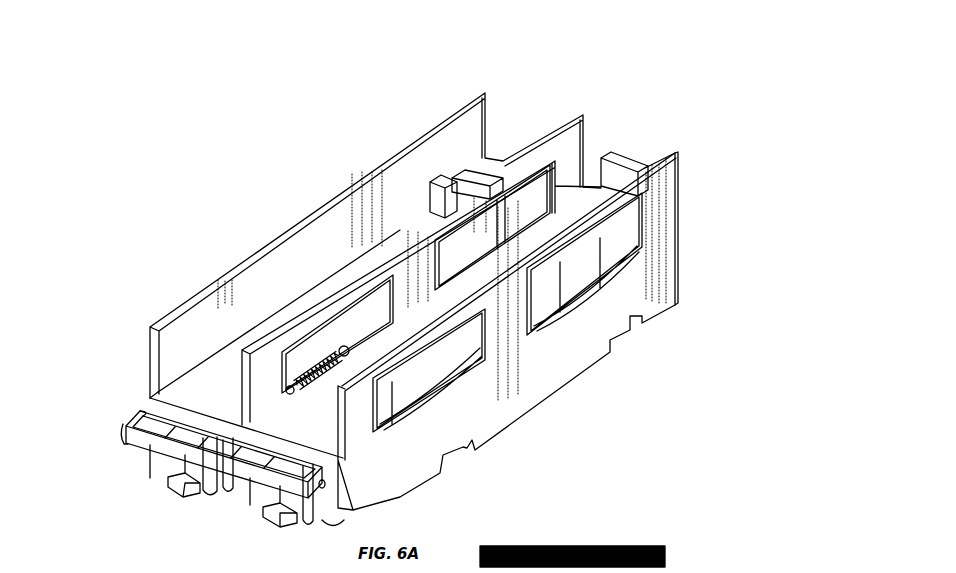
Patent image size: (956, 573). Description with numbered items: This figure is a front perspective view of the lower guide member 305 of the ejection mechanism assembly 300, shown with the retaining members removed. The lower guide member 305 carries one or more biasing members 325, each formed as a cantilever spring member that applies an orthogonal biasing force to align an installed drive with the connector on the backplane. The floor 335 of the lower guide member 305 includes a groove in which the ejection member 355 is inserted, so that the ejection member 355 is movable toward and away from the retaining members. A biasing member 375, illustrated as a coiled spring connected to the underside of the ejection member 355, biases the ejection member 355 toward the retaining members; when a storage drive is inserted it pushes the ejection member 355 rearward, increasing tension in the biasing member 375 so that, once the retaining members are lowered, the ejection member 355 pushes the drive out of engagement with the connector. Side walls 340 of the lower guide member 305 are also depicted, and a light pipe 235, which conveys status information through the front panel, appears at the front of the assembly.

The ejection mechanism assembly 300 is at (228, 76).
The lower guide member 305 is at (670, 248).
The biasing member 325 is at (325, 330).
The floor 335 is at (252, 382).
The side wall 340 is at (148, 327).
The ejection member 355 is at (470, 190).
The biasing member 375 is at (300, 378).
The light pipe 235 is at (180, 490).